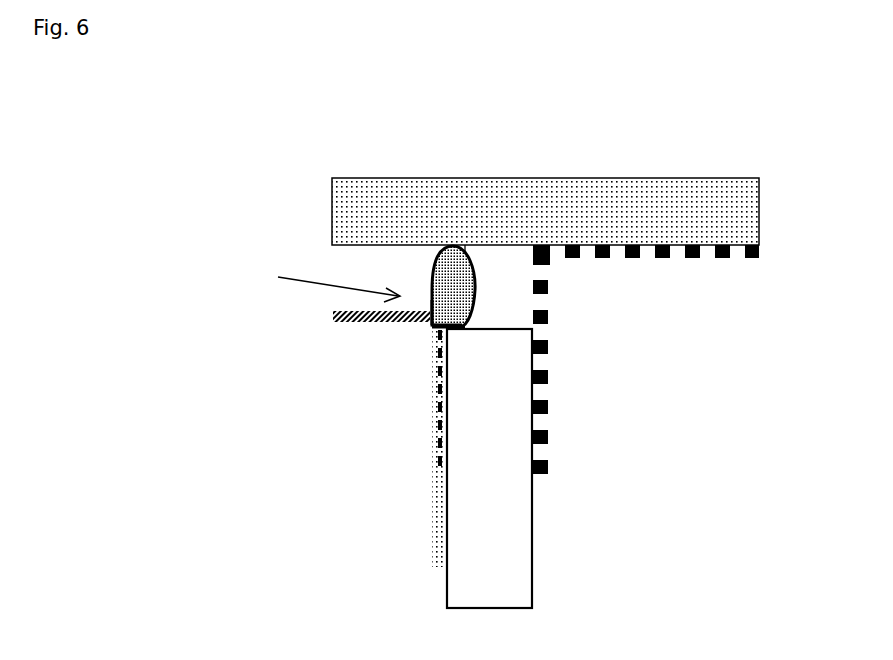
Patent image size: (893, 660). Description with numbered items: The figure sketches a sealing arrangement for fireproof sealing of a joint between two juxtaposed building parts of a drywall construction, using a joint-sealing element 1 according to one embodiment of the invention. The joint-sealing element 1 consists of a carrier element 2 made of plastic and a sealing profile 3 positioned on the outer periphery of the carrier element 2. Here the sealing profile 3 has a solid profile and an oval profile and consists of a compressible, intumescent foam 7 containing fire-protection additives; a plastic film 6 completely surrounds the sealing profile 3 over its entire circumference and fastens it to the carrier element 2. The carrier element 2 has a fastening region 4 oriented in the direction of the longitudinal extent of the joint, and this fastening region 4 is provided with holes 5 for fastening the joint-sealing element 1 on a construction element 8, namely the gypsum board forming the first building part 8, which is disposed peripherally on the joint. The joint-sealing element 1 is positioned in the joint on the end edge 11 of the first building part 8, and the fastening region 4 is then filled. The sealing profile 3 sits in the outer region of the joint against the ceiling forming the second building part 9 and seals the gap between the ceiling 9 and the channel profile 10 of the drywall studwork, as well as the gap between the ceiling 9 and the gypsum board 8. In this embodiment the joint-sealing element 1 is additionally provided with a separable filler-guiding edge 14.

The joint-sealing element 1 is at (329, 281).
The carrier element 2 is at (437, 364).
The sealing profile 3 is at (453, 277).
The fastening region 4 is at (437, 389).
The holes 5 is at (440, 440).
The plastic film 6 is at (432, 295).
The compressible, intumescent foam 7 is at (465, 250).
The first building part 8 is at (488, 595).
The second building part 9 is at (580, 207).
The channel profile 10 is at (543, 352).
The end edge 11 is at (462, 328).
The separable filler-guiding edge 14 is at (347, 322).